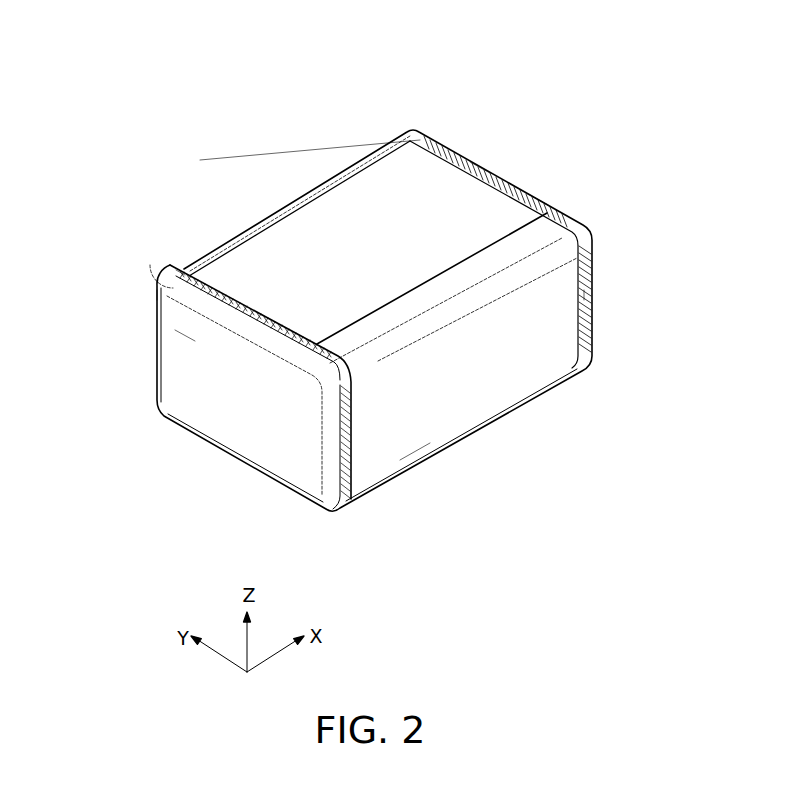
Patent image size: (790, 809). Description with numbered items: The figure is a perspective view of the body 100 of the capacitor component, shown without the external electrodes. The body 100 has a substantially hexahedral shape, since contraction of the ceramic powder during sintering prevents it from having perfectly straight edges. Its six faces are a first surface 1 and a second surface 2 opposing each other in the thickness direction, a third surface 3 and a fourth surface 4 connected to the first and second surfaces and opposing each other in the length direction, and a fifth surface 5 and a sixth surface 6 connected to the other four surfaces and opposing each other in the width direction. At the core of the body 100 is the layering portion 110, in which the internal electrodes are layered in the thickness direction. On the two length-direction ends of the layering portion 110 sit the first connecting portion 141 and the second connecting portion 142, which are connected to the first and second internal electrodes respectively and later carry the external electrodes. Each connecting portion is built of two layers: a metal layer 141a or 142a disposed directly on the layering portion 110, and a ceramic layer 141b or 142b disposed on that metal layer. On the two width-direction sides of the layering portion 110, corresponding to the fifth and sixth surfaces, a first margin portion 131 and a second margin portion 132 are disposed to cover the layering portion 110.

The body 100 is at (163, 50).
The layering portion 110 is at (372, 198).
The first surface 1 is at (418, 476).
The second surface 2 is at (411, 168).
The third surface 3 is at (184, 367).
The fourth surface 4 is at (601, 254).
The fifth surface 5 is at (485, 387).
The sixth surface 6 is at (320, 172).
The first margin portion 131 is at (537, 232).
The second margin portion 132 is at (261, 226).
The first connecting portion 141 is at (210, 198).
The metal layer 141a is at (178, 268).
The ceramic layer 141b is at (150, 265).
The second connecting portion 142 is at (585, 101).
The metal layer 142a is at (478, 163).
The ceramic layer 142b is at (537, 195).